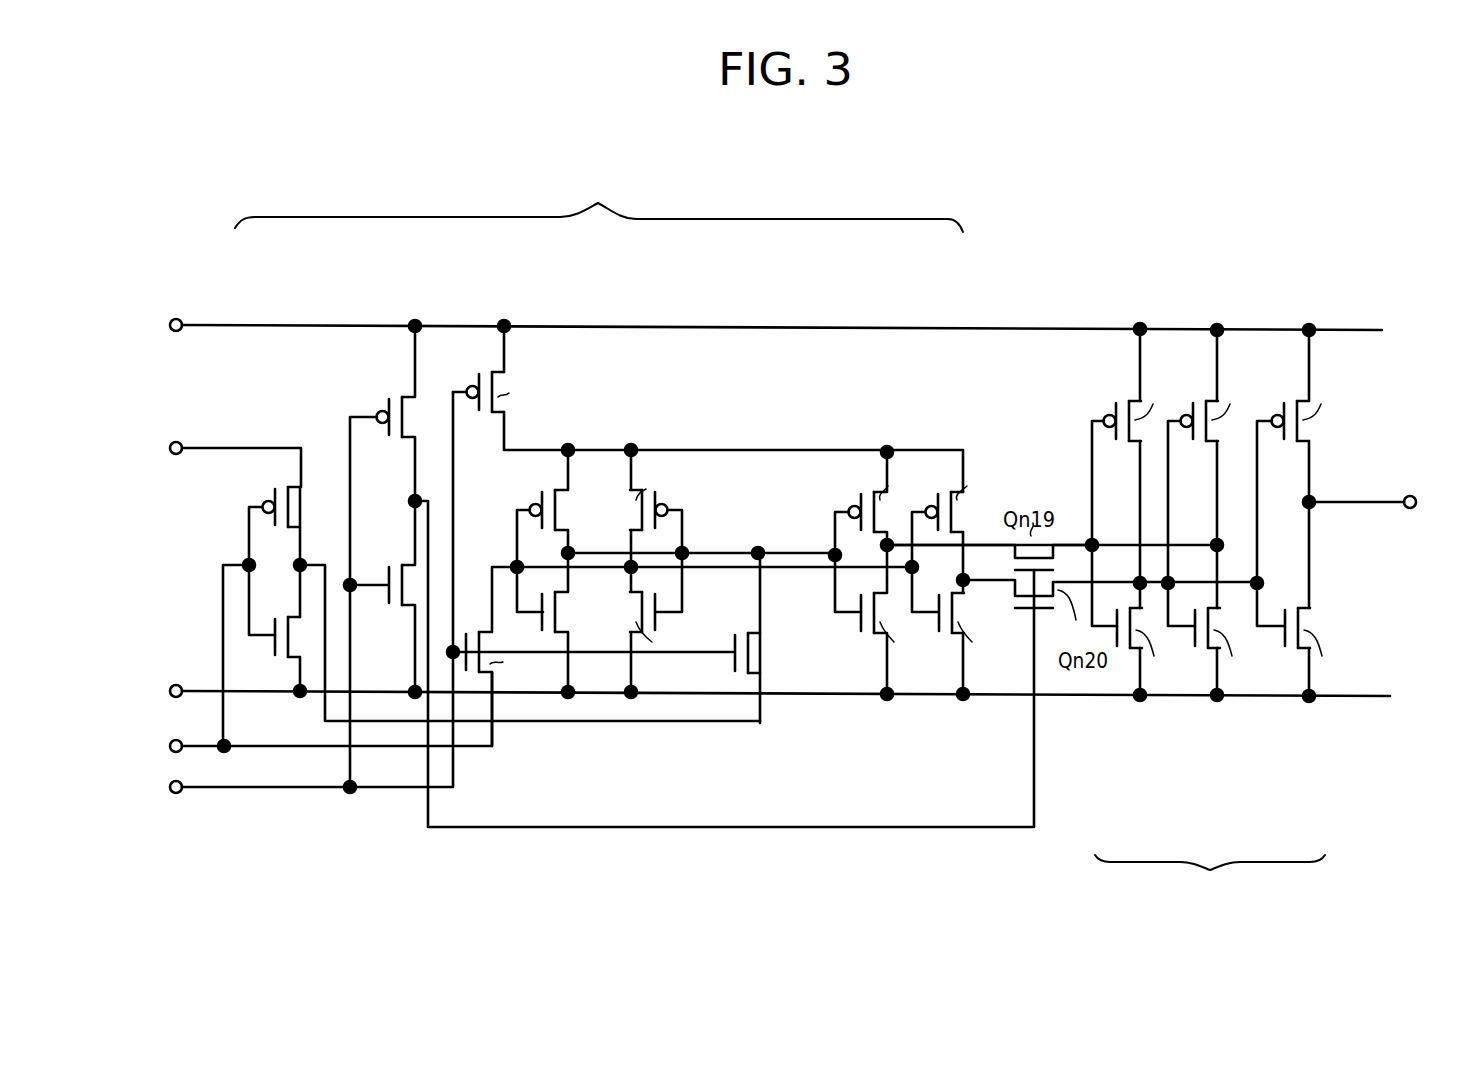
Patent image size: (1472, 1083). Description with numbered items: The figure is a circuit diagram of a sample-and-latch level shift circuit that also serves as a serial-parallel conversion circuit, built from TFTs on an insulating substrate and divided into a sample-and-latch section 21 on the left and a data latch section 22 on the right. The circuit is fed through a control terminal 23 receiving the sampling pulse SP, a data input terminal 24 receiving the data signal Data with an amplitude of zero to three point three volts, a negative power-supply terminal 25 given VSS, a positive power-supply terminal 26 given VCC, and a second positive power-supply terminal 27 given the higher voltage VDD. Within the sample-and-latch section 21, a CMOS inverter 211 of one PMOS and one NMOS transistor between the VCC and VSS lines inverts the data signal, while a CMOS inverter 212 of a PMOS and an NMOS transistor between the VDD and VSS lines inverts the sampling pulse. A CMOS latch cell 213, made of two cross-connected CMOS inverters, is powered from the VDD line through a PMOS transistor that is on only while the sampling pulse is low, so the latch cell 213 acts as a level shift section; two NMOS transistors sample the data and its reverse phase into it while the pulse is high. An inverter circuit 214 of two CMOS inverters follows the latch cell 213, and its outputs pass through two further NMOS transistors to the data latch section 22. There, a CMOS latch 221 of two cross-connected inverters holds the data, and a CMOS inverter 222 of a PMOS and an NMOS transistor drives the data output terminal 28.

The sample-and-latch section 21 is at (599, 197).
The CMOS inverter 211 is at (310, 426).
The CMOS inverter 212 is at (458, 342).
The CMOS latch cell 213 is at (665, 414).
The inverter circuit 214 is at (983, 418).
The data latch section 22 is at (1210, 883).
The CMOS latch 221 is at (1212, 300).
The CMOS inverter 222 is at (1241, 730).
The control terminal 23 is at (176, 793).
The data input terminal 24 is at (178, 740).
The negative power-supply terminal 25 is at (178, 685).
The positive power-supply terminal 26 is at (176, 454).
The positive power-supply terminal 27 is at (176, 331).
The data output terminal 28 is at (1410, 508).